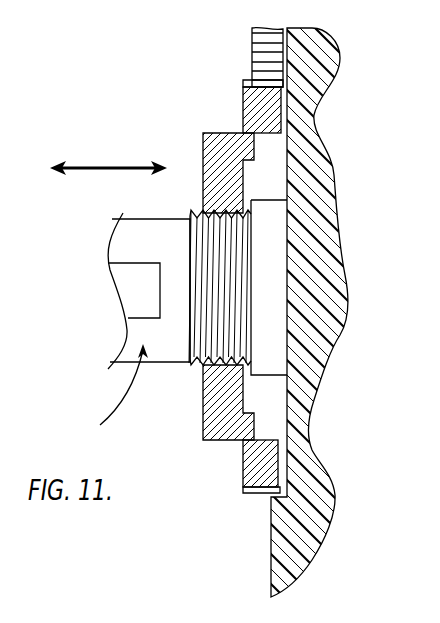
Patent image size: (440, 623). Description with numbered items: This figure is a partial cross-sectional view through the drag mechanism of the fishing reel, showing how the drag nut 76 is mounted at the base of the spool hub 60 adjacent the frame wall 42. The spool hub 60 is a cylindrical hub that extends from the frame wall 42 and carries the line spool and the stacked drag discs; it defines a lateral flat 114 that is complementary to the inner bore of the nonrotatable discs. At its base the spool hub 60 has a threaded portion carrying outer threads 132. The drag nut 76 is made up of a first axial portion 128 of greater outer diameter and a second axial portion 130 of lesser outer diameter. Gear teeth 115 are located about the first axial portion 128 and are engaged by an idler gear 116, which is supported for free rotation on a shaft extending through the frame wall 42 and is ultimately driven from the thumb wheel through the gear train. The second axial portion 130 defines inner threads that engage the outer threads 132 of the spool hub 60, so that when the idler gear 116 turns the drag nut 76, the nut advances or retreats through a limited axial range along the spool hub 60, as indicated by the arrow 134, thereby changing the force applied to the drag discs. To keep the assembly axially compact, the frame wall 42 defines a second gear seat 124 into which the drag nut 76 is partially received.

The frame wall 42 is at (270, 537).
The spool hub 60 is at (109, 396).
The drag nut 76 is at (204, 441).
The lateral flat 114 is at (135, 291).
The gear teeth 115 is at (250, 488).
The idler gear 116 is at (258, 59).
The second gear seat 124 is at (296, 405).
The first axial portion 128 is at (243, 108).
The second axial portion 130 is at (203, 146).
The outer threads 132 is at (202, 363).
The arrow 134 is at (100, 167).